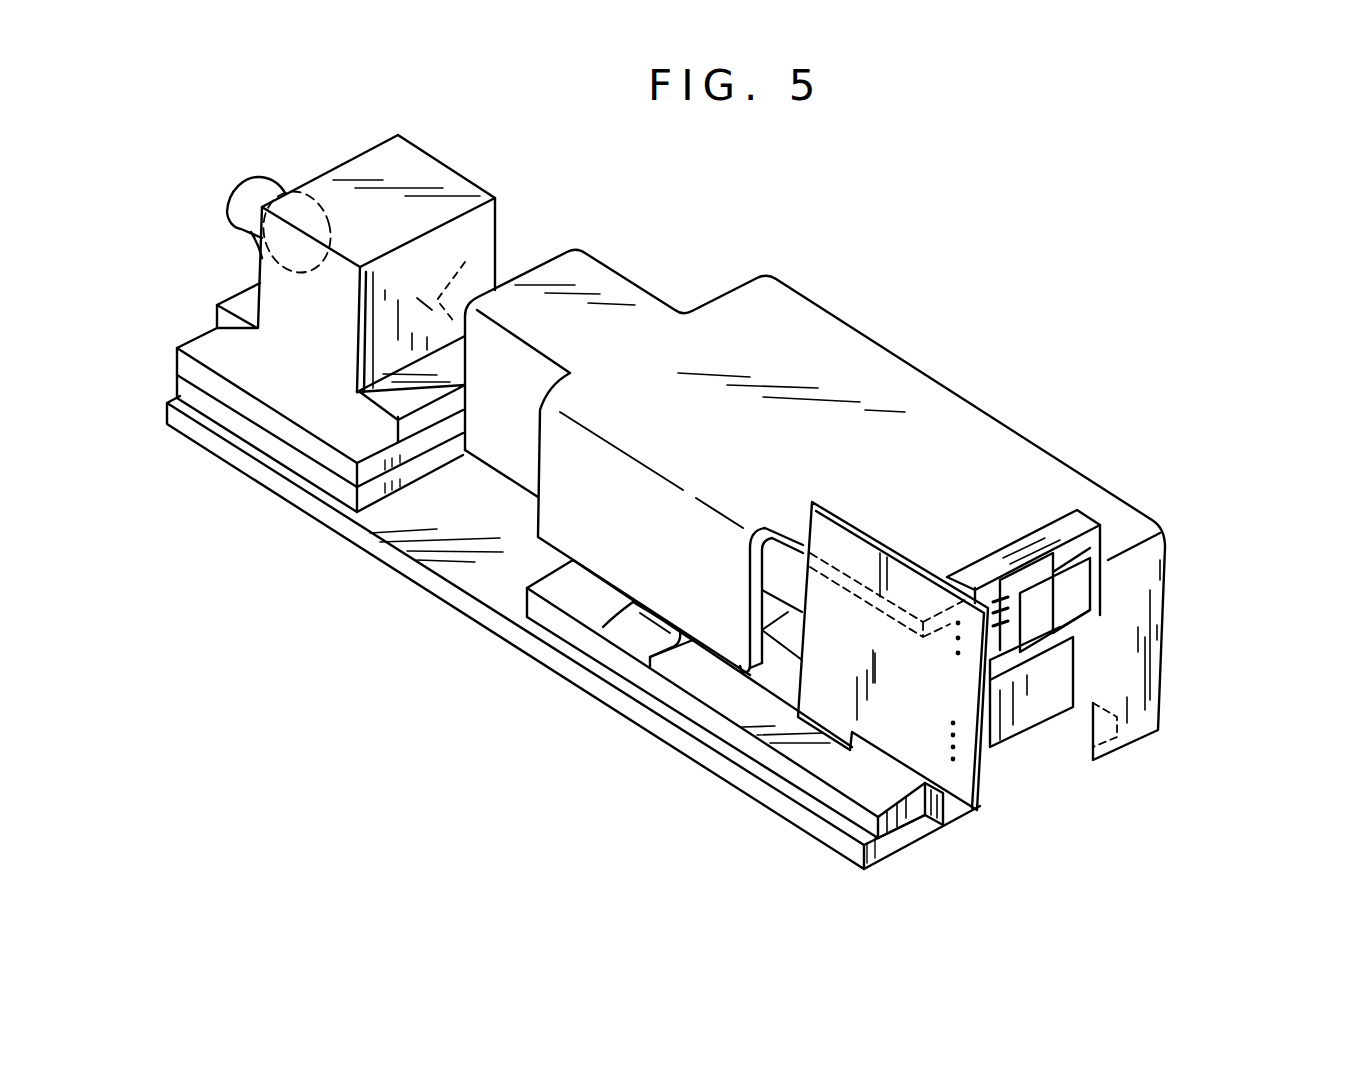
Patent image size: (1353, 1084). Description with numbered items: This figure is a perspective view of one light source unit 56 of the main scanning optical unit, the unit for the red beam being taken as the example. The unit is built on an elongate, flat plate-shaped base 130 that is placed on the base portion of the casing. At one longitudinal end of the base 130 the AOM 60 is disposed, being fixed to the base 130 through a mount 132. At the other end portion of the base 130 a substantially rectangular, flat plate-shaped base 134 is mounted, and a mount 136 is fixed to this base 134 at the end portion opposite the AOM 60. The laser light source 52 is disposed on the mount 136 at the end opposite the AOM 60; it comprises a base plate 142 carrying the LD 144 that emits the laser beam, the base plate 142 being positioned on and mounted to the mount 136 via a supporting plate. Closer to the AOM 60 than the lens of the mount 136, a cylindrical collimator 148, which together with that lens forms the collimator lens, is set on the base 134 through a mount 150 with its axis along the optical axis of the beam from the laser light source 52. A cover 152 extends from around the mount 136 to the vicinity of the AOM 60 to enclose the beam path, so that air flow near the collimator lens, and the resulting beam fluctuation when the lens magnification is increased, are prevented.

The light source unit 56 is at (1030, 240).
The AOM 60 is at (442, 186).
The cover 152 is at (828, 348).
The collimator 148 is at (783, 573).
The mount 132 is at (296, 463).
The base 130 is at (488, 626).
The mount 150 is at (783, 678).
The mount 136 is at (878, 766).
The base 134 is at (890, 793).
The base plate 142 is at (972, 790).
The LD 144 is at (1032, 710).
The laser light source 52 is at (1082, 673).